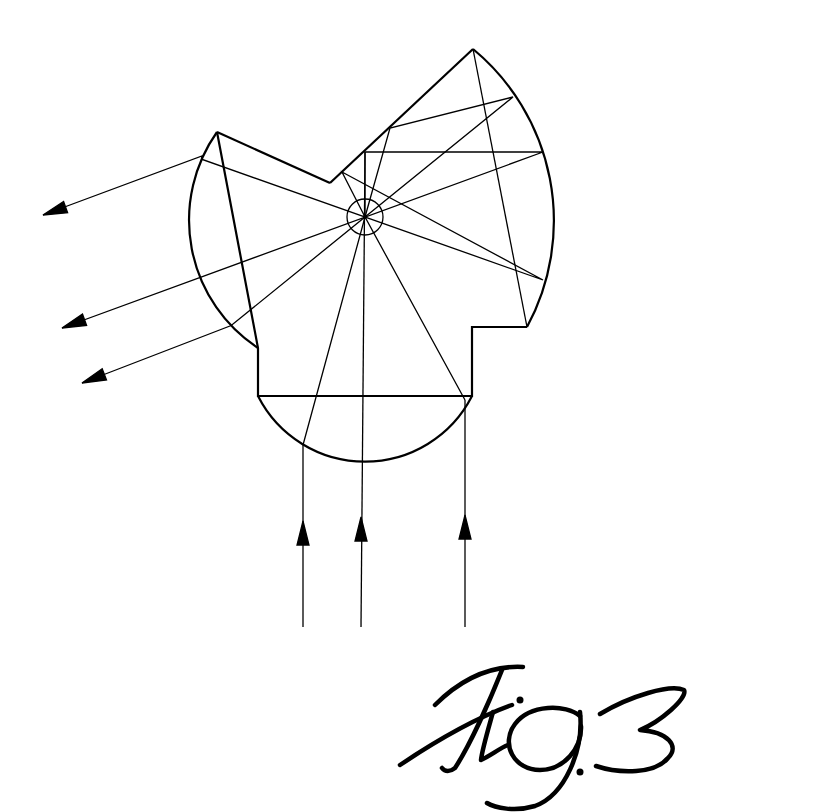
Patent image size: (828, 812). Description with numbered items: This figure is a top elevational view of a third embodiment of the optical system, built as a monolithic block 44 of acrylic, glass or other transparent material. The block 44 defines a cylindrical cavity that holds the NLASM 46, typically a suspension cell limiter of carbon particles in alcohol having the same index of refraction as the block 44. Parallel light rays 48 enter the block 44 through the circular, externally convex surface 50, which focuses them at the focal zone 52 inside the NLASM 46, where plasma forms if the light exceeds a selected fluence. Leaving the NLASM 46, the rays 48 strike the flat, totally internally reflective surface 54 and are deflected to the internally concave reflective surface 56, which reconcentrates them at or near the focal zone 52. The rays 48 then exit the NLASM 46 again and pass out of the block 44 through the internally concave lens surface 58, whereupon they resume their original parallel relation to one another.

The monolithic block 44 is at (473, 358).
The NLASM 46 is at (381, 230).
The parallel light rays 48 is at (358, 608).
The circular, externally convex surface 50 is at (405, 462).
The focal zone 52 is at (346, 217).
The flat, totally internally reflective surface 54 is at (432, 90).
The internally concave reflective surface 56 is at (530, 133).
The internally concave lens surface 58 is at (196, 228).